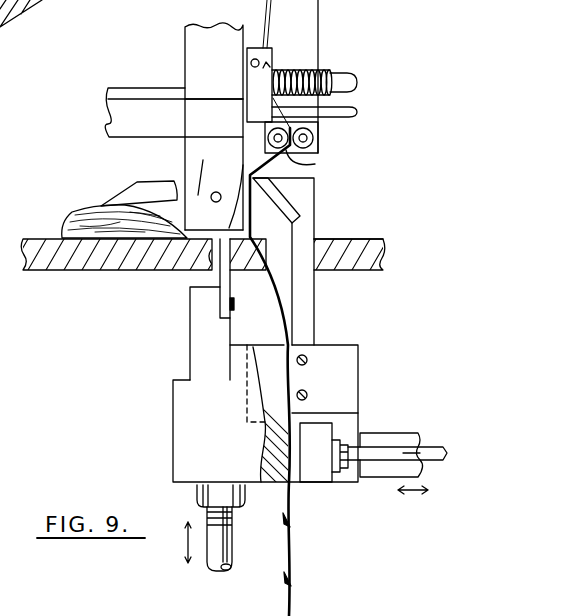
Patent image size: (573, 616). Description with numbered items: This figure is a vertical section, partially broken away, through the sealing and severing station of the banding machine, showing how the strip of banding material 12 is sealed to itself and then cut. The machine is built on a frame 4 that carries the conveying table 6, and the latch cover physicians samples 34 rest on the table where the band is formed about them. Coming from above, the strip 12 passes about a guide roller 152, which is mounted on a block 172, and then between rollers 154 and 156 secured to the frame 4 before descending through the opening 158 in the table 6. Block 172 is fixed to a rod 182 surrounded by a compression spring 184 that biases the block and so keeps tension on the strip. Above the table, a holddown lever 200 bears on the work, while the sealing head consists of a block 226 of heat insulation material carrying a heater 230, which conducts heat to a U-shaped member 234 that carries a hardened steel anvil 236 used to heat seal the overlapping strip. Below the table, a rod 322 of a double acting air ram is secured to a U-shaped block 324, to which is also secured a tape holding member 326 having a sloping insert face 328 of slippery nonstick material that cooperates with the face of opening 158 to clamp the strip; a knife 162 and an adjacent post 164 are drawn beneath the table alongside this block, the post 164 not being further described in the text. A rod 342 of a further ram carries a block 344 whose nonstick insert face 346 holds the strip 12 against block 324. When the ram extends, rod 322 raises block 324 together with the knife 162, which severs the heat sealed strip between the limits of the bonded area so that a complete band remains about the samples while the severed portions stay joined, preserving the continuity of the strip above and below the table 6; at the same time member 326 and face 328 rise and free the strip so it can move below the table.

The frame 4 is at (300, 30).
The conveying table 6 is at (361, 250).
The strip of banding material 12 is at (281, 290).
The latch cover physicians samples 34 is at (60, 218).
The guide roller 152 is at (247, 62).
The roller 154 is at (316, 136).
The roller 156 is at (316, 165).
The opening 158 is at (327, 236).
The knife 162 is at (220, 279).
The post 164 is at (212, 266).
The block 172 is at (258, 85).
The rod 182 is at (358, 81).
The compression spring 184 is at (328, 72).
The holddown lever 200 is at (151, 188).
The block of heat insulation material 226 is at (186, 31).
The heater 230 is at (130, 112).
The U-shaped member 234 is at (214, 185).
The hardened steel anvil 236 is at (214, 111).
The rod 322 is at (228, 542).
The U-shaped block 324 is at (232, 439).
The tape holding member 326 is at (314, 296).
The sloping insert face 328 is at (281, 196).
The rod 342 is at (395, 452).
The block 344 is at (319, 432).
The insert face 346 is at (298, 480).